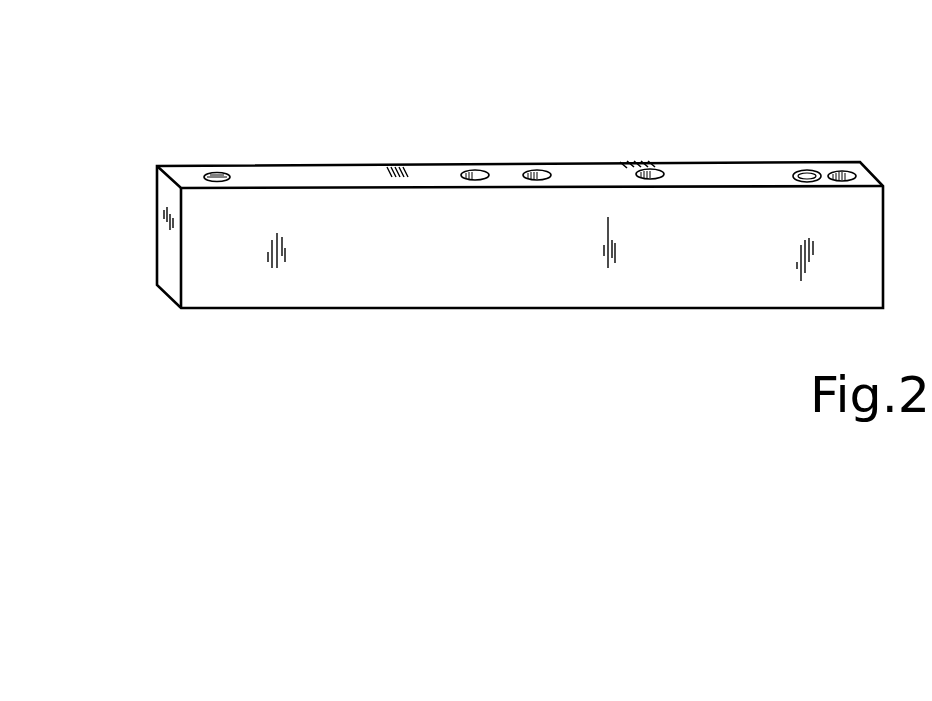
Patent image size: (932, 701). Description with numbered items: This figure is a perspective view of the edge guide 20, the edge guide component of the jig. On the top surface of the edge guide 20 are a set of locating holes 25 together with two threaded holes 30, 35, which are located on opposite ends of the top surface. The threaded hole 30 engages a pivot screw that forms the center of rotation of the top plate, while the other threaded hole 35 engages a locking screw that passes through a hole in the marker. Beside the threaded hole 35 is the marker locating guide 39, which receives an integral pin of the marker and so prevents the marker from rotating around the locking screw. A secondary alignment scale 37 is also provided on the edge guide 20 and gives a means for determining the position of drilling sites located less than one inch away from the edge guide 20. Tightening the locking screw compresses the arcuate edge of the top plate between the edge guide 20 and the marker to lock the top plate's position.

The edge guide 20 is at (163, 239).
The locating holes 25 is at (475, 168).
The threaded hole 30 is at (208, 173).
The threaded hole 35 is at (800, 168).
The secondary alignment scale 37 is at (635, 165).
The marker locating guide 39 is at (847, 167).